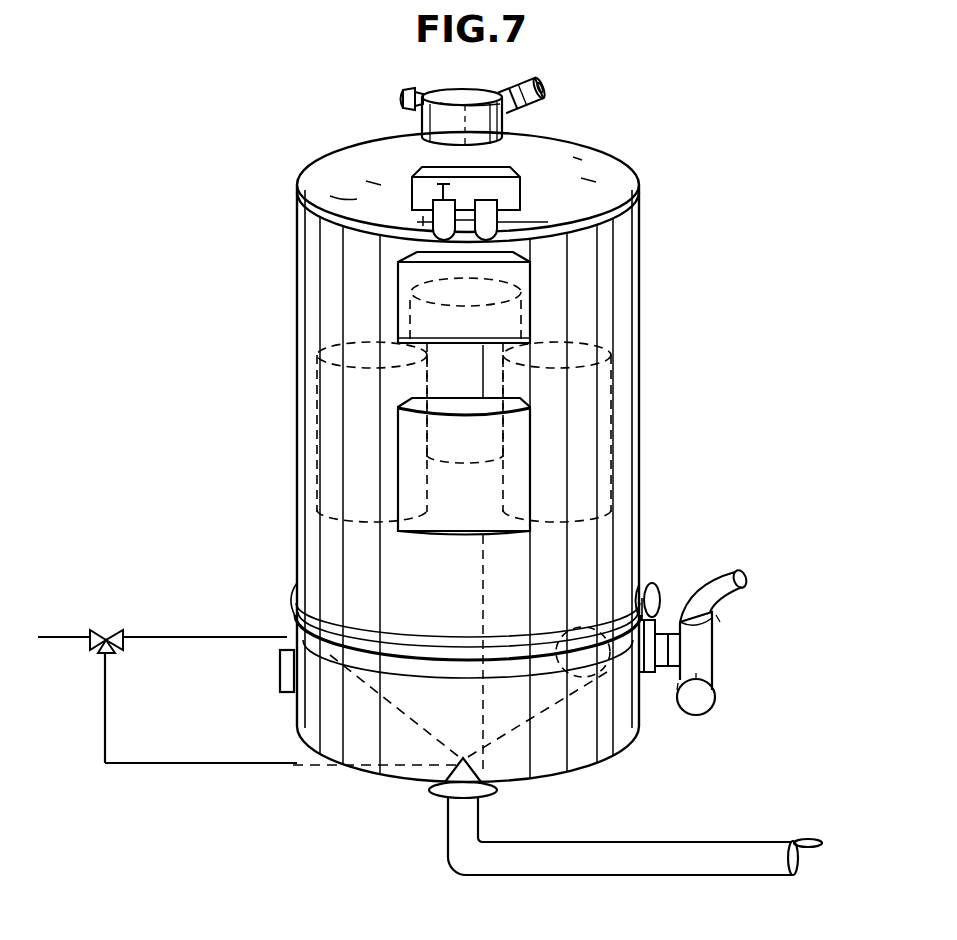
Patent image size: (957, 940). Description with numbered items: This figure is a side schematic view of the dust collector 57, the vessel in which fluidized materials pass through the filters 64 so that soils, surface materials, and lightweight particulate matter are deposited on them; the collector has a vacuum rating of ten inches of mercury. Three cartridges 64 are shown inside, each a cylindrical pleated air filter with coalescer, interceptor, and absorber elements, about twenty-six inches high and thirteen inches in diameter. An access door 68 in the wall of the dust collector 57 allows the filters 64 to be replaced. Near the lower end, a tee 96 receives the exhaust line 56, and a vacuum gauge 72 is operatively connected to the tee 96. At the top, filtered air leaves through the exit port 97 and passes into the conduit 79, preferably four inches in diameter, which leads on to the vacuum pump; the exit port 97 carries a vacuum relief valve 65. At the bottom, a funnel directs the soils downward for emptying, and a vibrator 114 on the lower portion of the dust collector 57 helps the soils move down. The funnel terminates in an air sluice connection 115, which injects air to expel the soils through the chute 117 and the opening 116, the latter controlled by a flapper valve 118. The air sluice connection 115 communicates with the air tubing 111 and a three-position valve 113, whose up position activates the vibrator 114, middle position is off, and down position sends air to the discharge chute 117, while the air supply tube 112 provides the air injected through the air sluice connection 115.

The dust collector 57 is at (250, 158).
The vacuum relief valve 65 is at (403, 95).
The exit port 97 is at (510, 90).
The conduit 79 is at (538, 114).
The filters 64 is at (367, 347).
The access door 68 is at (452, 532).
The vacuum gauge 72 is at (662, 594).
The exhaust line 56 is at (727, 595).
The tee 96 is at (714, 650).
The air tubing 111 is at (210, 637).
The air supply tube 112 is at (63, 638).
The three-position valve 113 is at (106, 640).
The vibrator 114 is at (280, 668).
The air sluice connection 115 is at (463, 757).
The chute 117 is at (615, 865).
The flapper valve 118 is at (807, 838).
The opening 116 is at (797, 873).